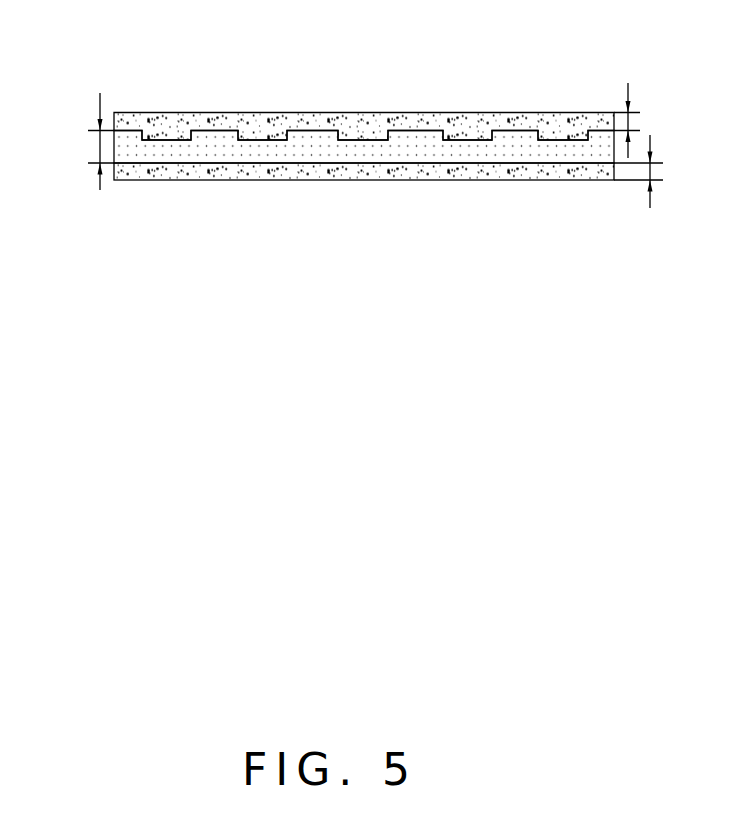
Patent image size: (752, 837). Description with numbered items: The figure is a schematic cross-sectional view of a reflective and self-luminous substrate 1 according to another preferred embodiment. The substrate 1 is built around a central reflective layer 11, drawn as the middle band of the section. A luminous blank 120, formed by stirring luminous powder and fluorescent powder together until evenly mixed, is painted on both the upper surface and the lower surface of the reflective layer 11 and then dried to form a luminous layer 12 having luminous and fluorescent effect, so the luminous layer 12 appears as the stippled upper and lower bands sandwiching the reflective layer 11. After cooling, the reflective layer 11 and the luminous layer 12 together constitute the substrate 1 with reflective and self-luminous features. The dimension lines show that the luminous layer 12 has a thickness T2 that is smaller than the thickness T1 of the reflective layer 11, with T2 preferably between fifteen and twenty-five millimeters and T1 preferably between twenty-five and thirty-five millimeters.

The substrate 1 is at (121, 81).
The reflective layer 11 is at (475, 150).
The luminous layer 12 is at (364, 148).
The luminous blank 120 is at (334, 113).
The thickness of the reflective layer T1 is at (85, 141).
The thickness of the luminous layer T2 is at (660, 145).